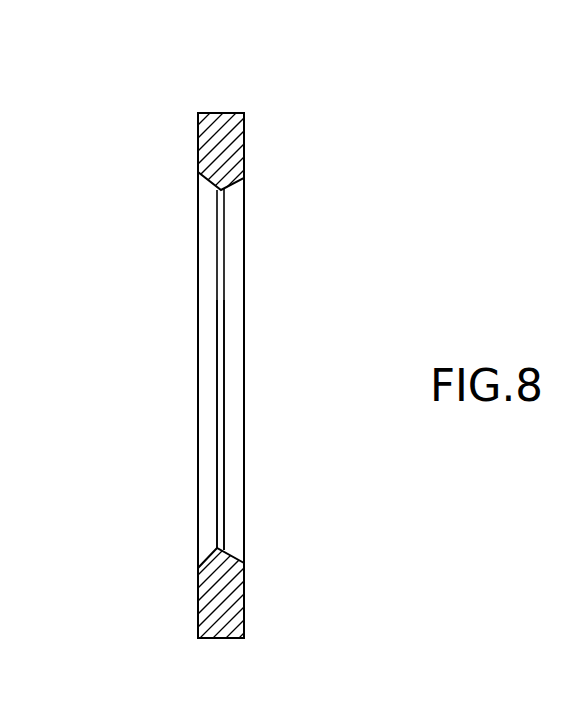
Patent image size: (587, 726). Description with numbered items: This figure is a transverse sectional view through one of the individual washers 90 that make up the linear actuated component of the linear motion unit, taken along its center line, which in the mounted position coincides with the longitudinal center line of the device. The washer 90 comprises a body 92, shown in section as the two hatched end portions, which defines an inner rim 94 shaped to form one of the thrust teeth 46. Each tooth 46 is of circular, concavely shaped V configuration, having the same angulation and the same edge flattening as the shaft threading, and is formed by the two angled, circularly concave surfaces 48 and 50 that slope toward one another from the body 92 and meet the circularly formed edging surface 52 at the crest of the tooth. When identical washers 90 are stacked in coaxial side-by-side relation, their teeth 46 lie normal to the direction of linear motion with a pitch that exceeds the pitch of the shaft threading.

The washer 90 is at (247, 99).
The body 92 is at (205, 622).
The angled circularly concave surface 48 is at (203, 340).
The angled circularly concave surface 50 is at (237, 333).
The edging surface 52 is at (222, 270).
The inner rim 94 is at (212, 481).
The thrust teeth 46 is at (226, 480).